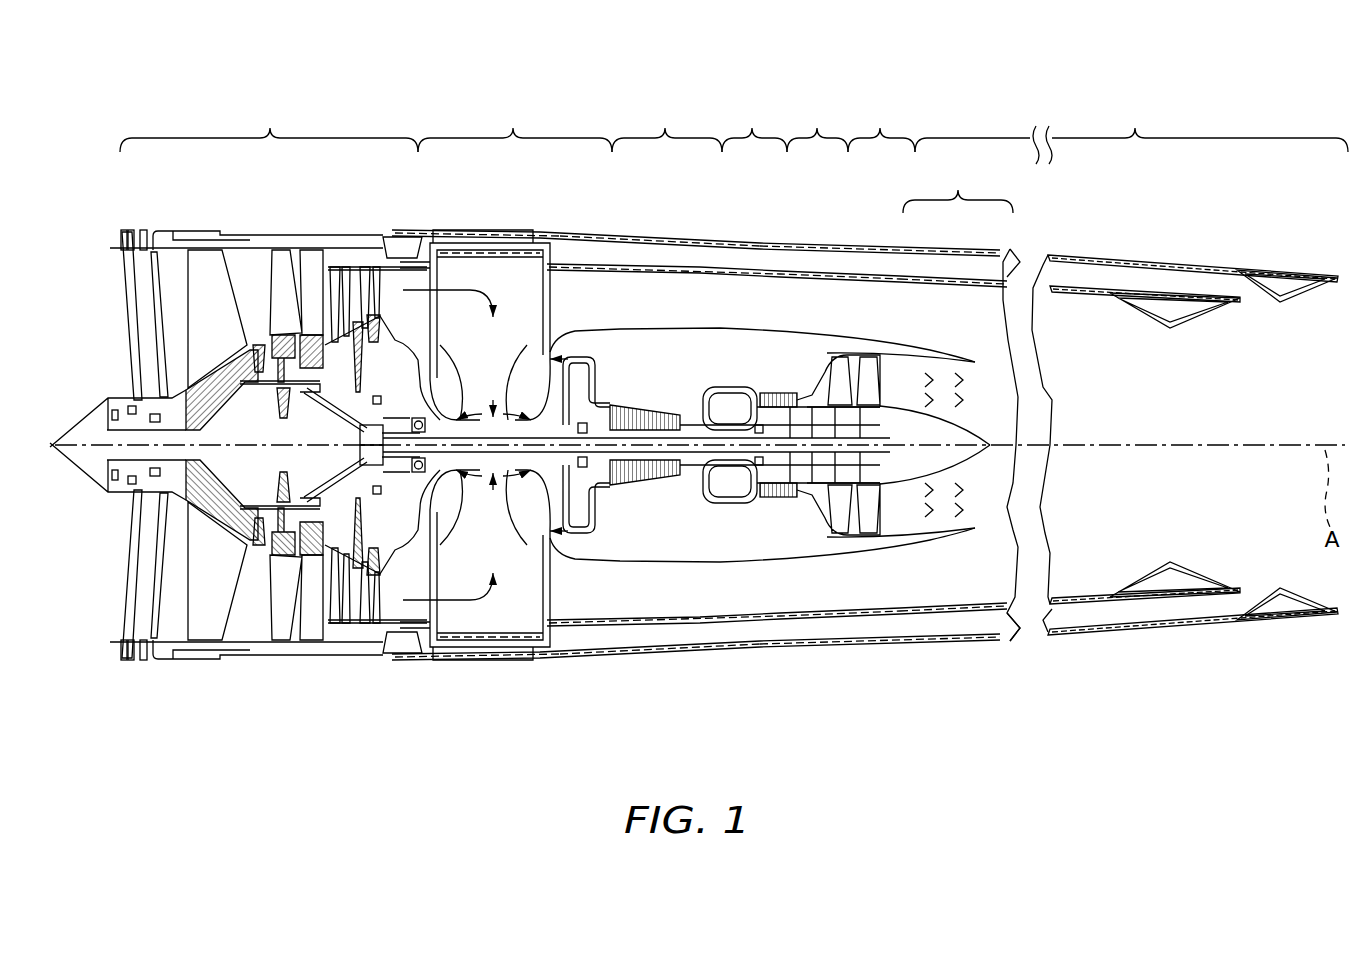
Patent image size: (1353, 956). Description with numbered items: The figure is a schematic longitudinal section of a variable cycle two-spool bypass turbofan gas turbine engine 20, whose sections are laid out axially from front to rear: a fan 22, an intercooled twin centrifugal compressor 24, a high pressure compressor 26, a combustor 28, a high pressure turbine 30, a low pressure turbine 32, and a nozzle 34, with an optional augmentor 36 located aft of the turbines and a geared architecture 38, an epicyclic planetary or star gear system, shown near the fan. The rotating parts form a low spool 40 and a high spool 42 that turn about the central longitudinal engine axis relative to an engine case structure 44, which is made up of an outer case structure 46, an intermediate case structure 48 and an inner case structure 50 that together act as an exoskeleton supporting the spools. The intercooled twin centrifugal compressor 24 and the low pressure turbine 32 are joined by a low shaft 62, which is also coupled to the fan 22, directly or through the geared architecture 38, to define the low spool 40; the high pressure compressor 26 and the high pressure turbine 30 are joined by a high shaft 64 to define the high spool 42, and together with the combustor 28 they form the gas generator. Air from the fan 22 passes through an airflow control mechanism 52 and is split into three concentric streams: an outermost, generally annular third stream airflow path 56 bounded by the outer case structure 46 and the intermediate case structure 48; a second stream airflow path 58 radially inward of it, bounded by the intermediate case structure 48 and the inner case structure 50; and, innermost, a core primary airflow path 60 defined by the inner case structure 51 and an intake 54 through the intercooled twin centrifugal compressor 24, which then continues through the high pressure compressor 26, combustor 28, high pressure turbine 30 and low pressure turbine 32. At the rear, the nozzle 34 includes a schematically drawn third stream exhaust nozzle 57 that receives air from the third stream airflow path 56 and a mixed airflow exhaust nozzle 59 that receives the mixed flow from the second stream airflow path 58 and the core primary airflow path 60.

The gas turbine engine 20 is at (1281, 118).
The fan 22 is at (269, 125).
The intercooled twin centrifugal compressor 24 is at (515, 125).
The high pressure compressor 26 is at (667, 125).
The combustor 28 is at (754, 125).
The high pressure turbine 30 is at (817, 125).
The low pressure turbine 32 is at (881, 125).
The nozzle 34 is at (1131, 131).
The augmentor 36 is at (958, 187).
The geared architecture 38 is at (360, 487).
The low spool 40 is at (395, 500).
The high spool 42 is at (756, 521).
The engine case structure 44 is at (583, 666).
The outer case structure 46 is at (453, 660).
The intermediate case structure 48 is at (787, 622).
The inner case structure 50 is at (647, 525).
The inner case structure 51 is at (450, 505).
The airflow control mechanism 52 is at (400, 643).
The intake 54 is at (503, 367).
The third stream airflow path 56 is at (695, 640).
The third stream exhaust nozzle 57 is at (1286, 600).
The second stream airflow path 58 is at (947, 587).
The mixed airflow exhaust nozzle 59 is at (1163, 595).
The core primary airflow path 60 is at (975, 528).
The low shaft 62 is at (812, 495).
The high shaft 64 is at (672, 458).